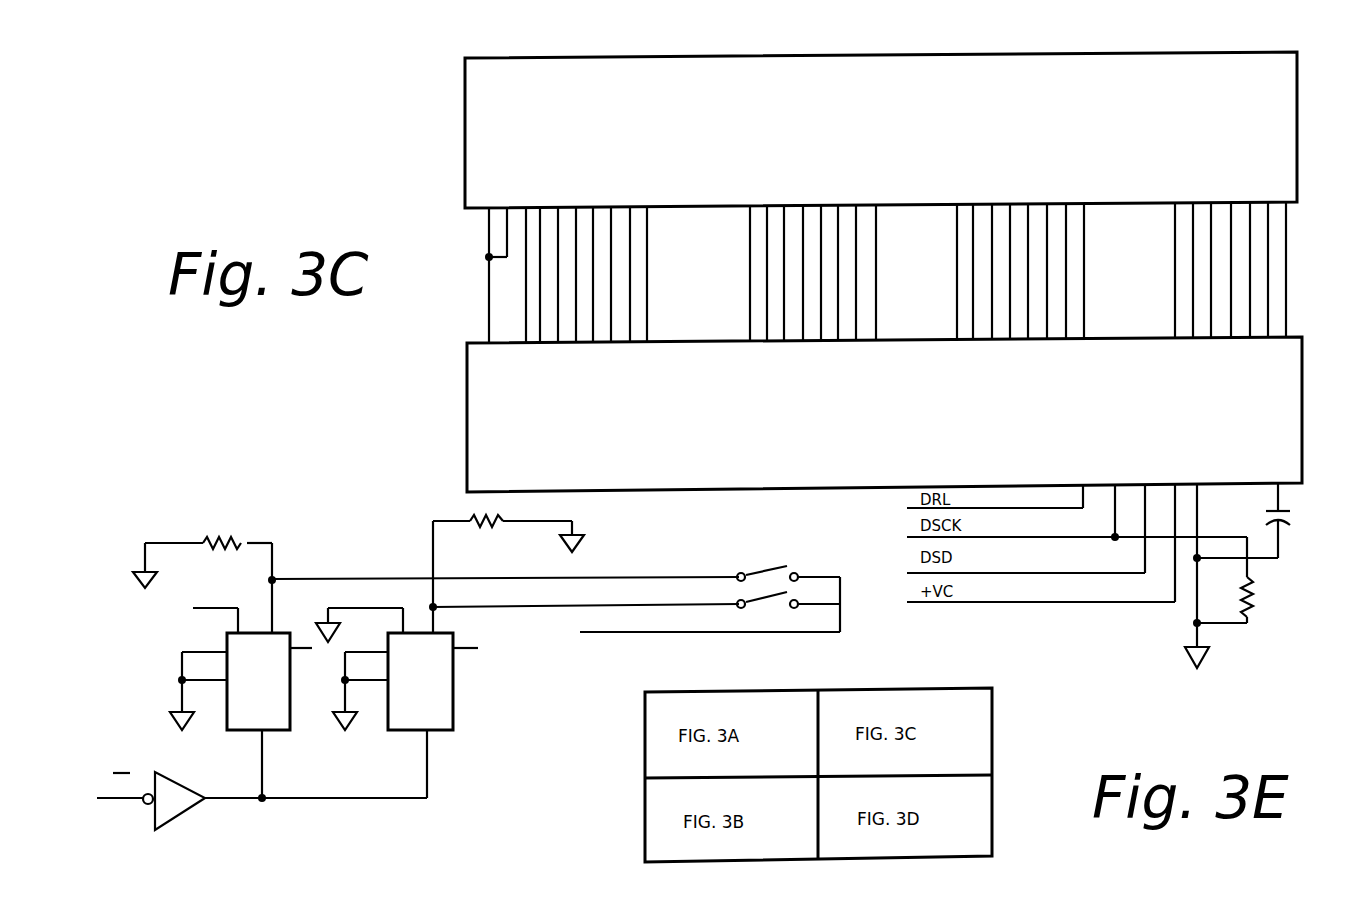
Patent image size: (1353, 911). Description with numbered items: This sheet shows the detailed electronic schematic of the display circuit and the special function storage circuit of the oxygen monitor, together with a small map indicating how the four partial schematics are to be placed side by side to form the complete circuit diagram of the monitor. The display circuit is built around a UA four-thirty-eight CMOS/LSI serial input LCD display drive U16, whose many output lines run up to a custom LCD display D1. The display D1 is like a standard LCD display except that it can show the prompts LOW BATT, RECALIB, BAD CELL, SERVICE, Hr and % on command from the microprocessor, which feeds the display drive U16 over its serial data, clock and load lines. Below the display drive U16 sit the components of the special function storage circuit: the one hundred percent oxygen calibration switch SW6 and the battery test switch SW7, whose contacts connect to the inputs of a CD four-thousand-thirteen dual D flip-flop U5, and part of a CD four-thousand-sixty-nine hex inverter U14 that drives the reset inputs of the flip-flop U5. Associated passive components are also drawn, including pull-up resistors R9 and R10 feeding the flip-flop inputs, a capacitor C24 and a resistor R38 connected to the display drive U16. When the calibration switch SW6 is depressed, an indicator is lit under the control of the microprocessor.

The custom LCD display D1 is at (465, 164).
The serial input LCD display drive U16 is at (884, 414).
The dual D flip-flop U5 is at (310, 702).
The resistor R9 is at (202, 573).
The resistor R10 is at (508, 523).
The capacitor C24 is at (1302, 520).
The resistor R38 is at (1246, 580).
The 100% oxygen calibration switch SW6 is at (806, 555).
The switch SW7 is at (768, 604).
The hex inverter U14 is at (262, 806).